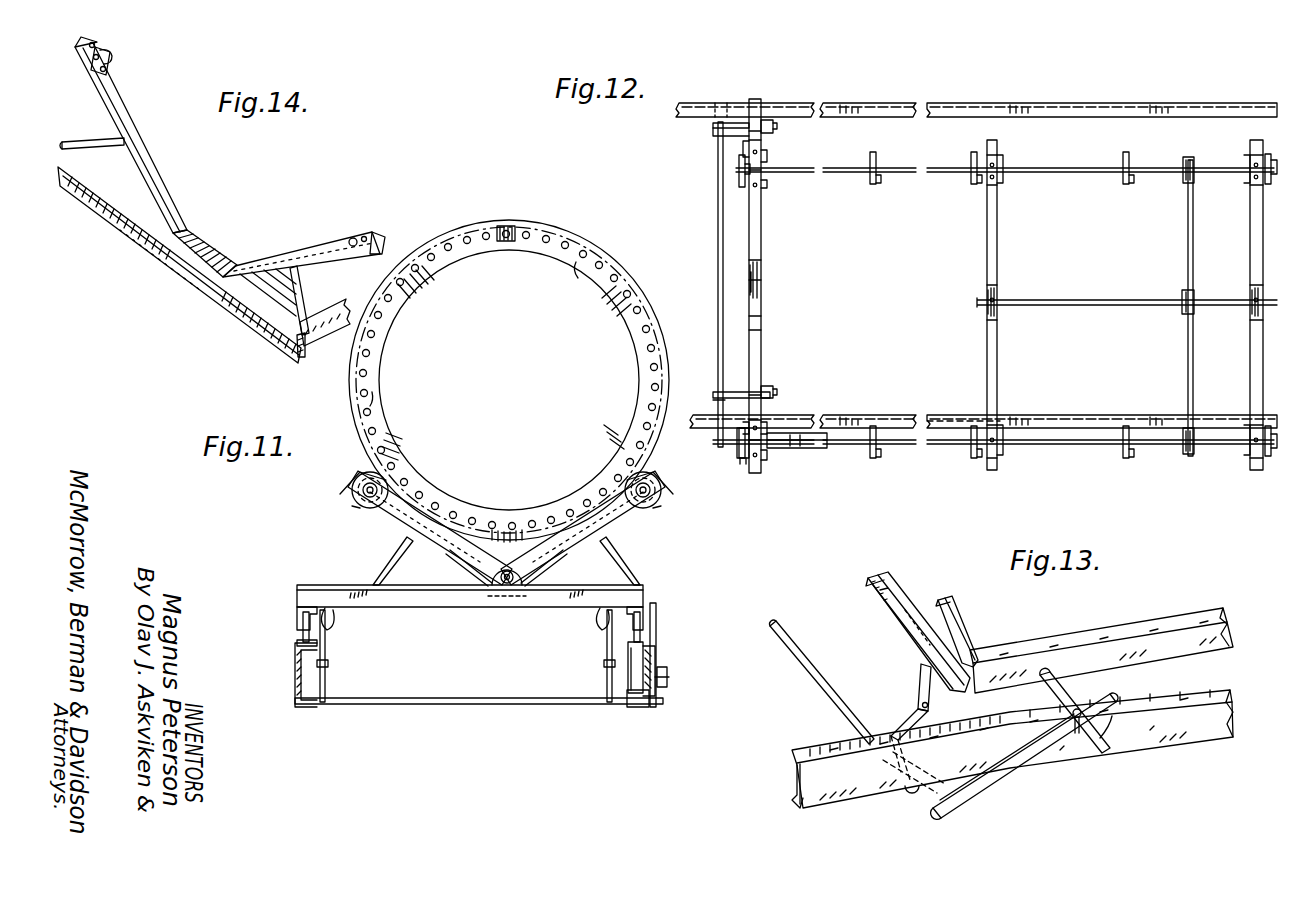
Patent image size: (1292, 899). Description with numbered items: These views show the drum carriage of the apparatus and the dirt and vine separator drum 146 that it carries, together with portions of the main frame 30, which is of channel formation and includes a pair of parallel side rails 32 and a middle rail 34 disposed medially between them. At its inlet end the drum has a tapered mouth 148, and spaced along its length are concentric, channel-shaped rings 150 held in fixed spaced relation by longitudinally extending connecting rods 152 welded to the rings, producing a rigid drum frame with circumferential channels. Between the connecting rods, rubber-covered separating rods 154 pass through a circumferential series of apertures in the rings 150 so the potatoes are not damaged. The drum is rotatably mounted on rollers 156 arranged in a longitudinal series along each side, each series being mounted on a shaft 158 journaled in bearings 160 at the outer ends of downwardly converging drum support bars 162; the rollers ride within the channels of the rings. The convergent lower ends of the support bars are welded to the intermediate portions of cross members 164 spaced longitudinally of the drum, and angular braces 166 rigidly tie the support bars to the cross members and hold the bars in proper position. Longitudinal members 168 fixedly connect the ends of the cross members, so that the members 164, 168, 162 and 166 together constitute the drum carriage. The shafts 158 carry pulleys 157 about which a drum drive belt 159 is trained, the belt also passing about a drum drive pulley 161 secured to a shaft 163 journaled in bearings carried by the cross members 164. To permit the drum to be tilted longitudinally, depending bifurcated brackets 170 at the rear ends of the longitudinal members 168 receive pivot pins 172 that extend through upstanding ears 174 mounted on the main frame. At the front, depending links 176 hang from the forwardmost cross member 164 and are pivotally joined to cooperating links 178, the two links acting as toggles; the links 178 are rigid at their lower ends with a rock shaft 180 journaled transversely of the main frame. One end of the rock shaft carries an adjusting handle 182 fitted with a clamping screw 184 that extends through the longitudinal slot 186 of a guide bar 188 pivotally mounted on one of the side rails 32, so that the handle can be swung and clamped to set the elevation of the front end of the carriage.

In FIG. 11, the side rail 30 is at (646, 644).
In FIG. 12, the side rail 30 is at (818, 416).
In FIG. 13, the side rail 30 is at (792, 748).
In FIG. 11, the side rails 32 is at (656, 656).
In FIG. 12, the side rails 32 is at (906, 416).
In FIG. 13, the side rails 32 is at (826, 804).
In FIG. 11, the middle rail 34 is at (296, 666).
In FIG. 12, the middle rail 34 is at (886, 102).
In FIG. 11, the dirt and vine separator drum 146 is at (500, 226).
In FIG. 11, the tapered mouth 148 is at (396, 316).
In FIG. 11, the rings 150 is at (480, 242).
In FIG. 11, the connecting rods 152 is at (474, 229).
In FIG. 11, the separating rods 154 is at (594, 270).
In FIG. 11, the rollers 156 is at (362, 476).
In FIG. 12, the rollers 156 is at (738, 176).
In FIG. 12, the pulleys 157 is at (1182, 158).
In FIG. 11, the shaft 158 is at (352, 480).
In FIG. 12, the shaft 158 is at (1078, 174).
In FIG. 11, the drum drive belt 159 is at (456, 576).
In FIG. 12, the drum drive belt 159 is at (1188, 232).
In FIG. 14, the bearings 160 is at (108, 55).
In FIG. 11, the bearings 160 is at (354, 492).
In FIG. 12, the bearings 160 is at (766, 166).
In FIG. 11, the drum drive pulley 161 is at (496, 576).
In FIG. 12, the drum drive pulley 161 is at (1182, 306).
In FIG. 14, the drum support bars 162 is at (120, 97).
In FIG. 11, the drum support bars 162 is at (350, 500).
In FIG. 12, the drum support bars 162 is at (762, 234).
In FIG. 11, the shaft 163 is at (506, 598).
In FIG. 12, the shaft 163 is at (1114, 298).
In FIG. 14, the cross members 164 is at (203, 243).
In FIG. 11, the cross members 164 is at (434, 606).
In FIG. 12, the cross members 164 is at (762, 290).
In FIG. 13, the cross members 164 is at (882, 578).
In FIG. 14, the angular braces 166 is at (96, 146).
In FIG. 11, the angular braces 166 is at (392, 558).
In FIG. 13, the angular braces 166 is at (950, 600).
In FIG. 14, the longitudinal members 168 is at (303, 360).
In FIG. 13, the longitudinal members 168 is at (1196, 612).
In FIG. 11, the bifurcated brackets 170 is at (298, 612).
In FIG. 11, the pivot pins 172 is at (302, 630).
In FIG. 11, the upstanding ears 174 is at (298, 644).
In FIG. 11, the depending links 176 is at (328, 604).
In FIG. 12, the depending links 176 is at (770, 120).
In FIG. 13, the depending links 176 is at (921, 670).
In FIG. 11, the cooperating links 178 is at (328, 672).
In FIG. 12, the cooperating links 178 is at (732, 122).
In FIG. 13, the cooperating links 178 is at (908, 722).
In FIG. 11, the rock shaft 180 is at (366, 702).
In FIG. 12, the rock shaft 180 is at (720, 220).
In FIG. 13, the rock shaft 180 is at (786, 632).
In FIG. 11, the adjusting handle 182 is at (650, 696).
In FIG. 12, the adjusting handle 182 is at (736, 448).
In FIG. 13, the adjusting handle 182 is at (1002, 768).
In FIG. 11, the clamping screw 184 is at (668, 680).
In FIG. 13, the clamping screw 184 is at (1076, 732).
In FIG. 13, the longitudinal slot 186 is at (1104, 735).
In FIG. 11, the guide bar 188 is at (657, 614).
In FIG. 12, the guide bar 188 is at (785, 448).
In FIG. 13, the guide bar 188 is at (1044, 674).